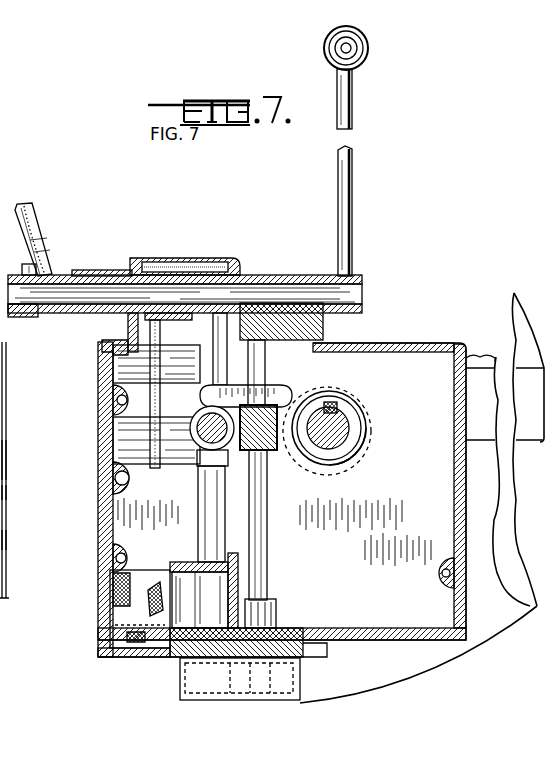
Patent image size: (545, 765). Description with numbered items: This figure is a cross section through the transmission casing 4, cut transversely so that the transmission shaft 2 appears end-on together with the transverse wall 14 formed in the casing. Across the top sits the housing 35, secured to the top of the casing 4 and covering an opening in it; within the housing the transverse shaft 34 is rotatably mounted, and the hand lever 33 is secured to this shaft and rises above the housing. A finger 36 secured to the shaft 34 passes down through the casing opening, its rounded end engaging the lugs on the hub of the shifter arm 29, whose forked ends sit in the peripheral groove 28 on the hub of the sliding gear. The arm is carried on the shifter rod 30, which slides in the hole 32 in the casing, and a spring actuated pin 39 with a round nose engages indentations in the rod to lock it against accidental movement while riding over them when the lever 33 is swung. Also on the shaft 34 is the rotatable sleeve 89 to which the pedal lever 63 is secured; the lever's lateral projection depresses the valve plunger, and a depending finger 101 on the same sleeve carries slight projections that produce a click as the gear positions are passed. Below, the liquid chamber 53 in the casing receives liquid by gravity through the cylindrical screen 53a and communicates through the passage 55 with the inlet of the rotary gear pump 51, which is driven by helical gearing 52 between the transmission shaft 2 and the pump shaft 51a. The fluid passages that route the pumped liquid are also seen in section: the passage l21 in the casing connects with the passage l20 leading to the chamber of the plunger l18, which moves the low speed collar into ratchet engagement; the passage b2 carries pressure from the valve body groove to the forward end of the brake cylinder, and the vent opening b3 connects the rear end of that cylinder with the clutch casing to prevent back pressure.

The transmission shaft 2 is at (352, 456).
The transmission casing 4 is at (22, 268).
The transverse wall 14 is at (372, 612).
The peripheral groove 28 is at (365, 412).
The shifter arm 29 is at (340, 388).
The shifter rod 30 is at (196, 466).
The hole 32 is at (6, 460).
The lever 33 is at (352, 172).
The transverse shaft 34 is at (303, 276).
The housing 35 is at (238, 262).
The finger 36 is at (218, 330).
The spring actuated pin 39 is at (6, 377).
The rotary gear pump 51 is at (178, 690).
The pump shaft 51a is at (264, 558).
The helical gearing 52 is at (278, 452).
The liquid chamber 53 is at (180, 590).
The cylindrical screen 53a is at (110, 616).
The passage 55 is at (176, 662).
The pedal lever 63 is at (36, 217).
The sleeve 89 is at (130, 260).
The depending finger 101 is at (128, 332).
The passage b2 is at (118, 479).
The vent opening b3 is at (118, 559).
The plunger l18 is at (6, 541).
The passage l20 is at (6, 493).
The passage l21 is at (117, 400).